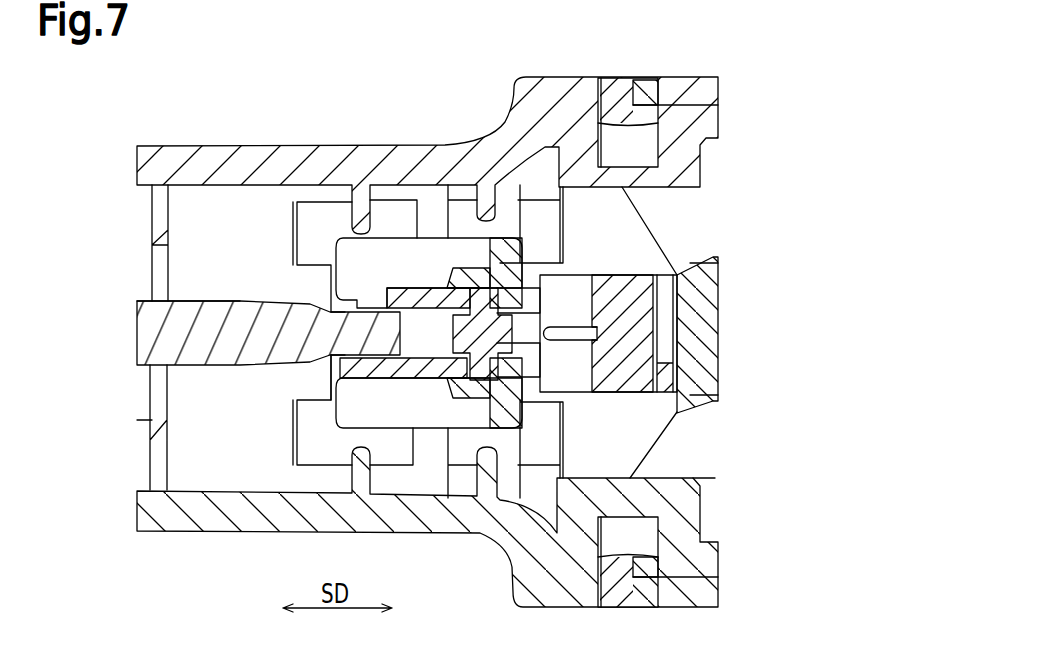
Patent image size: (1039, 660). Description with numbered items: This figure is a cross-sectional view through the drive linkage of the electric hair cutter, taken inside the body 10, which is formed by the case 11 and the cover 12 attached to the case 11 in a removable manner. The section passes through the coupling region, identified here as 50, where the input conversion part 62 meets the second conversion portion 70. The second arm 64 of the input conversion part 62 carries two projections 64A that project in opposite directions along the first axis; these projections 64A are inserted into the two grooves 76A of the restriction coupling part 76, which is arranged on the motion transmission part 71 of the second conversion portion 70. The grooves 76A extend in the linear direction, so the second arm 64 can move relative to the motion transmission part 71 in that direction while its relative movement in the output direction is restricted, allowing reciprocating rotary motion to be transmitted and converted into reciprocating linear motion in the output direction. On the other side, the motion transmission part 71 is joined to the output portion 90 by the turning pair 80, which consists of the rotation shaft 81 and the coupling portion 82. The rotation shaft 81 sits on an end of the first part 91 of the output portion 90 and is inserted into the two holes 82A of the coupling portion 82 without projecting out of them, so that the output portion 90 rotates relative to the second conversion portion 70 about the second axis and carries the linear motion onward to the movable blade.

The body 10 is at (427, 342).
The case 11 is at (553, 607).
The cover 12 is at (551, 76).
The seal unit 50 is at (379, 341).
The input conversion part 62 is at (519, 292).
The second arm 64 is at (519, 292).
The projections 64A is at (522, 280).
The second conversion portion 70 is at (512, 423).
The motion transmission part 71 is at (420, 284).
The restriction coupling part 76 is at (629, 331).
The grooves 76A is at (547, 278).
The turning pair 80 is at (294, 289).
The rotation shaft 81 is at (331, 378).
The coupling portion 82 is at (429, 334).
The holes 82A is at (363, 284).
The output portion 90 is at (241, 337).
The first part 91 is at (227, 301).